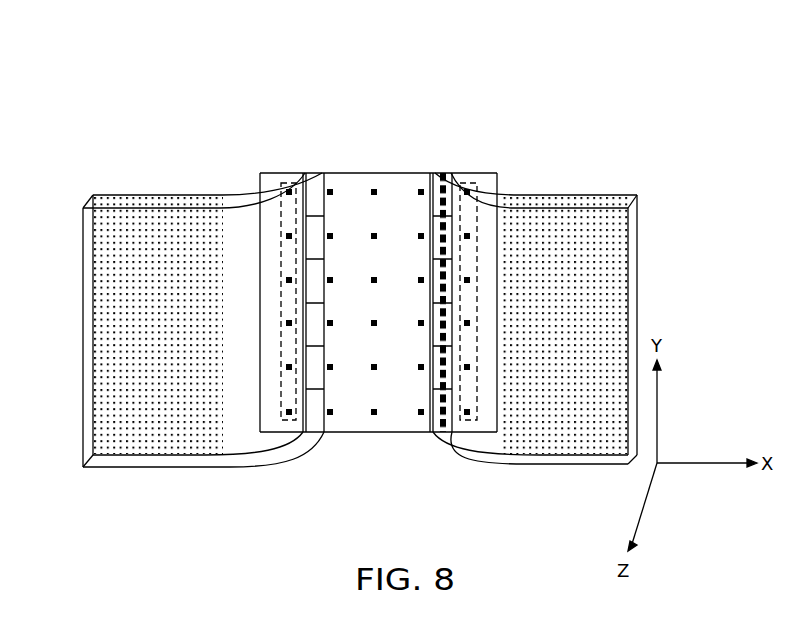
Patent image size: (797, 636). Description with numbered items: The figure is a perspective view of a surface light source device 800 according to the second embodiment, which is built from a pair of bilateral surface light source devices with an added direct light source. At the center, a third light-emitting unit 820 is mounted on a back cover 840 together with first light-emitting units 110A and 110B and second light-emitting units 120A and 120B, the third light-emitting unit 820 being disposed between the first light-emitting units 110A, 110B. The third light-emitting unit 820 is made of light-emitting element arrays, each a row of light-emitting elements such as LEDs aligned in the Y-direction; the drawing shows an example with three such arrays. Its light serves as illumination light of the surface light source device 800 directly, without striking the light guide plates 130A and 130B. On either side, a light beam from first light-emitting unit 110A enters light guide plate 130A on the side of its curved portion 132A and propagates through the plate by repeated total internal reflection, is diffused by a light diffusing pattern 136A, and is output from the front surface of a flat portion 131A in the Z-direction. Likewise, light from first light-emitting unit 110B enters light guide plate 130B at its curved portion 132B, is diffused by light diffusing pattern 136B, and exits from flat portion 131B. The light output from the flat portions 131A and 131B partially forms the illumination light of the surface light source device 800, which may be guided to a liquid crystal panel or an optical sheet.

The surface light source device 800 is at (178, 80).
The light guide plate 130B is at (83, 219).
The flat portion 131B is at (134, 207).
The light diffusing pattern 136B is at (145, 440).
The light guide plate 130A is at (637, 217).
The flat portion 131A is at (596, 206).
The light diffusing pattern 136A is at (580, 438).
The curved portion 132B is at (268, 176).
The curved portion 132A is at (452, 178).
The second light-emitting unit 120B is at (282, 187).
The second light-emitting unit 120A is at (470, 185).
The first light-emitting unit 110B is at (313, 176).
The first light-emitting unit 110A is at (443, 178).
The third light-emitting unit 820 is at (374, 190).
The back cover 840 is at (376, 436).